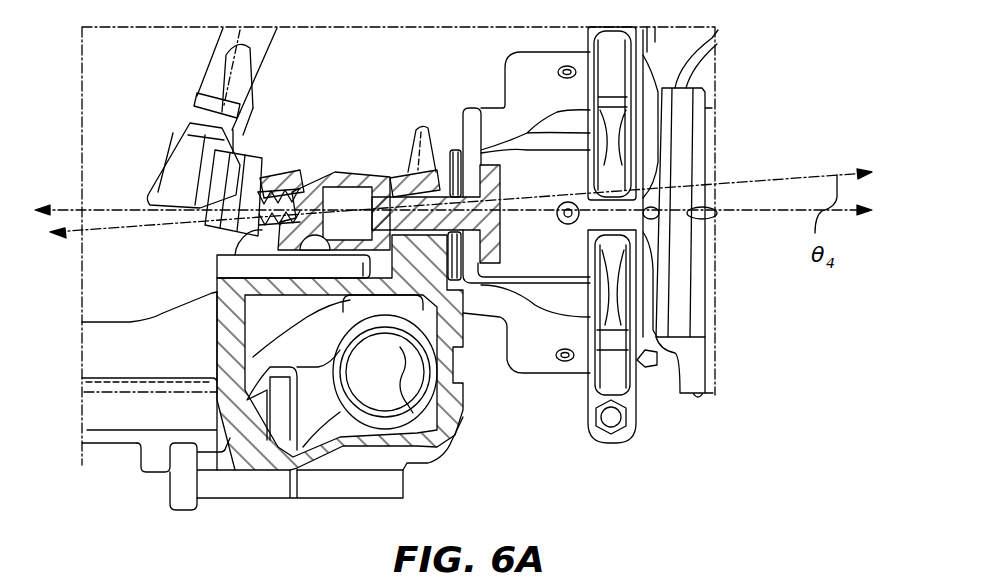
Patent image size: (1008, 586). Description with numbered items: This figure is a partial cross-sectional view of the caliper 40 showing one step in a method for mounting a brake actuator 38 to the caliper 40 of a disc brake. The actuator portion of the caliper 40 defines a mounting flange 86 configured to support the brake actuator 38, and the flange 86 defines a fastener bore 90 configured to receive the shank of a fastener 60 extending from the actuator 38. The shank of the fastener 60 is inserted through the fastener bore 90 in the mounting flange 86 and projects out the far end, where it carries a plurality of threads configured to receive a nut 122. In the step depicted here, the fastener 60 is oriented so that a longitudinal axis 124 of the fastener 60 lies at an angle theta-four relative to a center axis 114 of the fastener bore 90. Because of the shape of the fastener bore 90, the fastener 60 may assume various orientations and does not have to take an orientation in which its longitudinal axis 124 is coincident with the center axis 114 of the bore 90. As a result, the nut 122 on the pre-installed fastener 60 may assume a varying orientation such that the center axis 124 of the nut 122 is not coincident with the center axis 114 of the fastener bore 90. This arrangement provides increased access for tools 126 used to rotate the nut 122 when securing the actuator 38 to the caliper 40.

The actuator 38 is at (715, 340).
The caliper 40 is at (452, 464).
The fasteners 60 is at (474, 150).
The mounting flange 86 is at (416, 138).
The fastener bore 90 is at (433, 188).
The center axis 114 is at (793, 180).
The nut 122 is at (368, 190).
The longitudinal axis 124 is at (790, 217).
The tools 126 is at (170, 160).